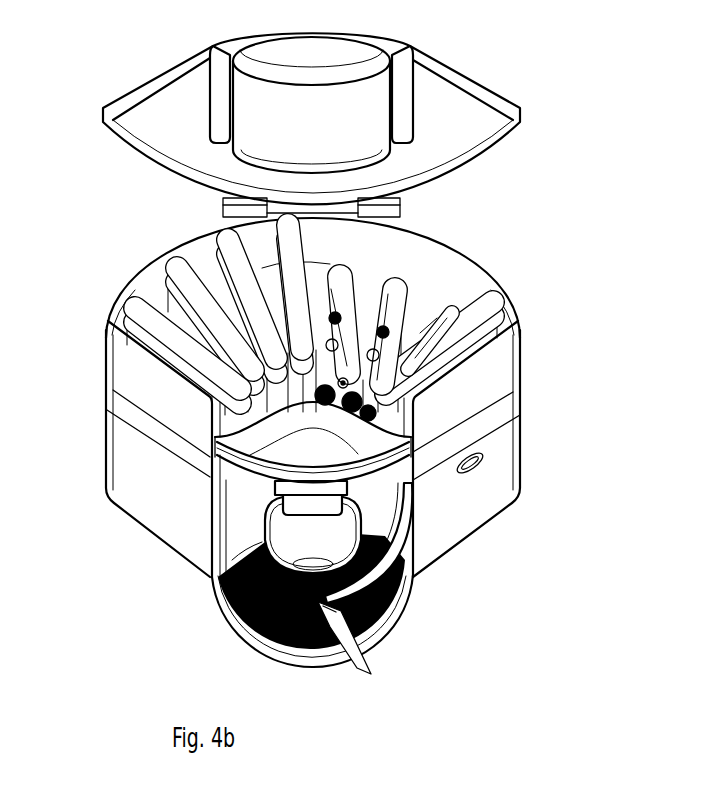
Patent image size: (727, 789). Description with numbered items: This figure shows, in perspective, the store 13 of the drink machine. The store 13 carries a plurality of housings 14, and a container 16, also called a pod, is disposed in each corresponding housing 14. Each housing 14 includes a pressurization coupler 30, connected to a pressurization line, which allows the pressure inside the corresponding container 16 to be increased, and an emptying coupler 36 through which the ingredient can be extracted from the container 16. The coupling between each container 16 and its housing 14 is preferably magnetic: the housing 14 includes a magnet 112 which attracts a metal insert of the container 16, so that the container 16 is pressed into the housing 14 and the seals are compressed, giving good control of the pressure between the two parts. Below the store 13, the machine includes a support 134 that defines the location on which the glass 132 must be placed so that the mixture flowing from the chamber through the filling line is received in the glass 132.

The store 13 is at (108, 320).
The housing 14 is at (394, 303).
The container 16 is at (143, 295).
The pressurization coupler 30 is at (405, 297).
The emptying coupler 36 is at (347, 418).
The magnet 112 is at (398, 381).
The glass 132 is at (287, 527).
The support 134 is at (232, 618).